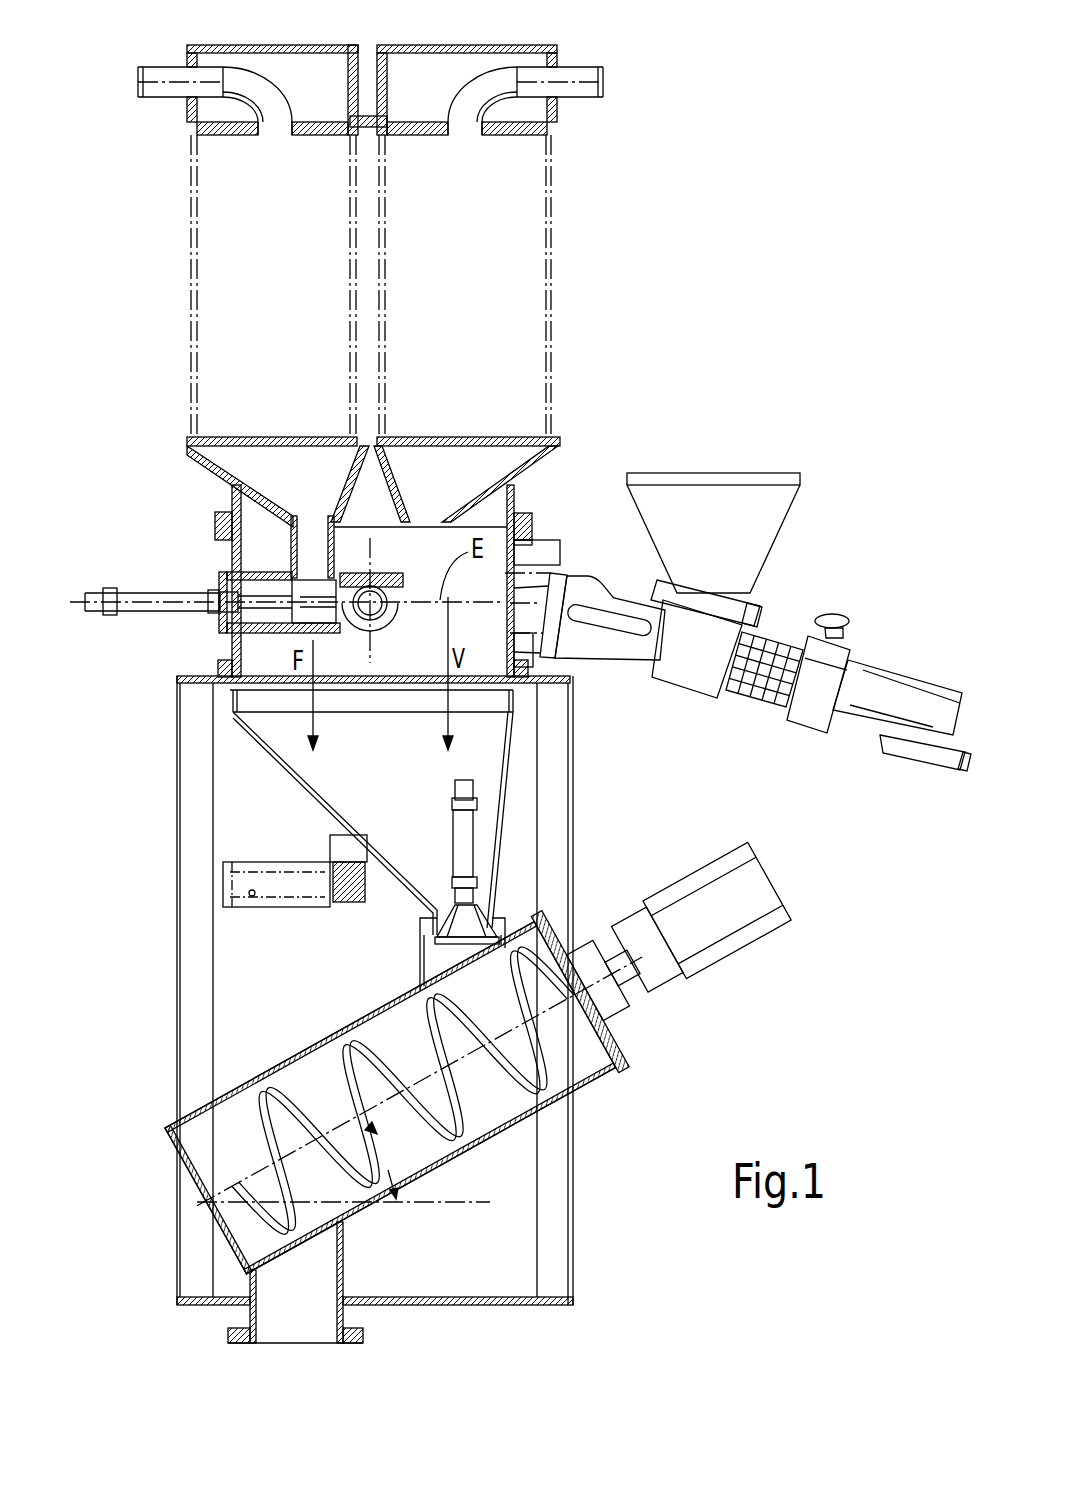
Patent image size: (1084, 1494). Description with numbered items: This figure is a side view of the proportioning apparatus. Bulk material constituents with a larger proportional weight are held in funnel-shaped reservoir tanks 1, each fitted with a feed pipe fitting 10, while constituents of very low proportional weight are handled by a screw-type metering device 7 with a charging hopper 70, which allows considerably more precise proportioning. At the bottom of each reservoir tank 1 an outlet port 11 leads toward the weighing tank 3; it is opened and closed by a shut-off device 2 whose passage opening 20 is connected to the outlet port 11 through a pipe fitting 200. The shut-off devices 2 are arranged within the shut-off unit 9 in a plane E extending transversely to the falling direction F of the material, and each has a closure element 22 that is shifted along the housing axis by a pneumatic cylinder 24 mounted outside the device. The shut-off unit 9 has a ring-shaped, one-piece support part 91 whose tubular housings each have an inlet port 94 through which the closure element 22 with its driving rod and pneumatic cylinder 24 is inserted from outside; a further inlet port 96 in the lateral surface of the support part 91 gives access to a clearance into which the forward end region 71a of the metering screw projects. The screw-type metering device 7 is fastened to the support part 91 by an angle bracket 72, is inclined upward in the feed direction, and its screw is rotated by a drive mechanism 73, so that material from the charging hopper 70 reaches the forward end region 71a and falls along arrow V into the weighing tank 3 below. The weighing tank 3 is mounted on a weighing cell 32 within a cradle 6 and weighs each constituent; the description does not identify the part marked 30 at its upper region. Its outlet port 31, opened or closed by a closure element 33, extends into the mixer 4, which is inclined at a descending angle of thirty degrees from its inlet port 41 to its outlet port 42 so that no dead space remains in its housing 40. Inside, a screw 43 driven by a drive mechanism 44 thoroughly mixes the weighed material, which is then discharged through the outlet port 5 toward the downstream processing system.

The reservoir tank 1 is at (187, 278).
The feed pipe fitting 10 is at (155, 78).
The outlet port 11 is at (303, 508).
The shut-off device 2 is at (207, 612).
The passage opening 20 is at (312, 574).
The pipe fitting 200 is at (338, 548).
The pneumatic cylinder 24 is at (127, 590).
The shut-off unit 9 is at (220, 641).
The support part 91 is at (523, 518).
The inlet port 94 is at (282, 620).
The inlet port 96 is at (380, 610).
The closure element 22 is at (335, 615).
The screw-type metering device 7 is at (868, 615).
The charging hopper 70 is at (720, 500).
The angle bracket 72 is at (545, 545).
The forward end region 71a is at (512, 578).
The drive mechanism 73 is at (912, 695).
The weighing tank 3 is at (507, 815).
The hopper rim 30 is at (495, 706).
The outlet port 31 is at (482, 902).
The weighing cell 32 is at (267, 913).
The closure element 33 is at (460, 936).
The inlet port 41 is at (442, 963).
The mixer 4 is at (603, 1078).
The housing 40 is at (518, 1130).
The outlet port 42 is at (293, 1243).
The screw 43 is at (200, 1130).
The drive mechanism 44 is at (746, 962).
The cradle 6 is at (573, 1262).
The outlet port 5 is at (300, 1337).